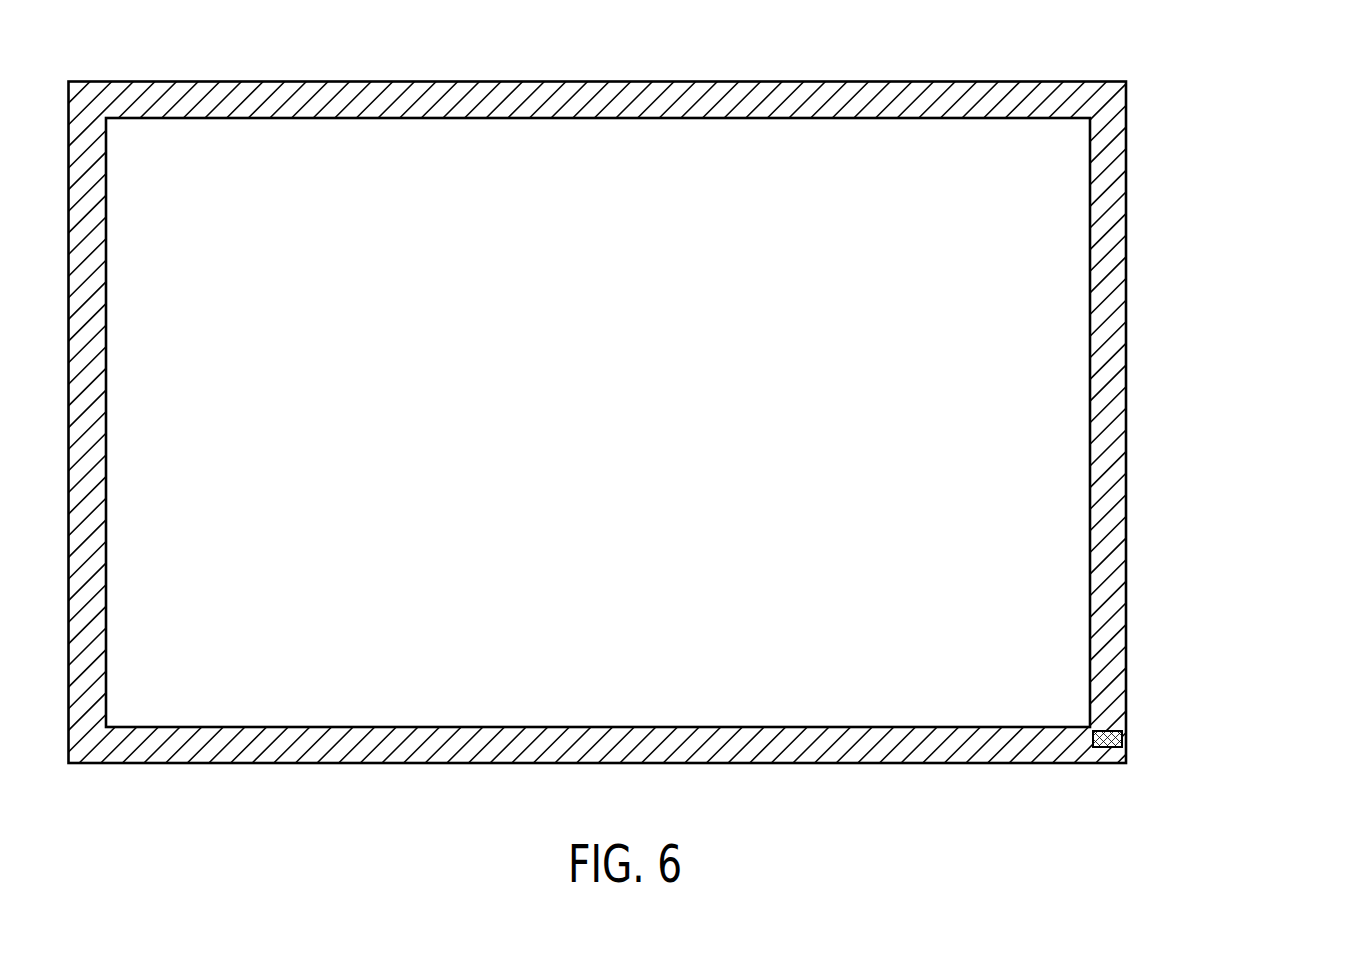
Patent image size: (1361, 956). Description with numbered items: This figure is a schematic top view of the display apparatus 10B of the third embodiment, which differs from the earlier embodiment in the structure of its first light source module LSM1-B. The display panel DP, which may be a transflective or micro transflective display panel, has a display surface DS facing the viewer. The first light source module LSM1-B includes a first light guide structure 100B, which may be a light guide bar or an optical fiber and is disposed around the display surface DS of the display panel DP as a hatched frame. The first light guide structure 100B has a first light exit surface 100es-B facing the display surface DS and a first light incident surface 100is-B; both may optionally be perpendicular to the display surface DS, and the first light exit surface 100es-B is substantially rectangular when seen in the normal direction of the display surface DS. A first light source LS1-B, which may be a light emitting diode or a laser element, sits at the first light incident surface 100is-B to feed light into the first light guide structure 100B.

The display apparatus 10B is at (1279, 847).
The first light guide structure 100B is at (1108, 688).
The display panel DP is at (1052, 430).
The display surface DS is at (632, 158).
The first light exit surface 100es-B is at (231, 128).
The first light source LS1-B is at (1122, 740).
The first light incident surface 100is-B is at (1096, 742).
The first light source module LSM1-B is at (1234, 672).